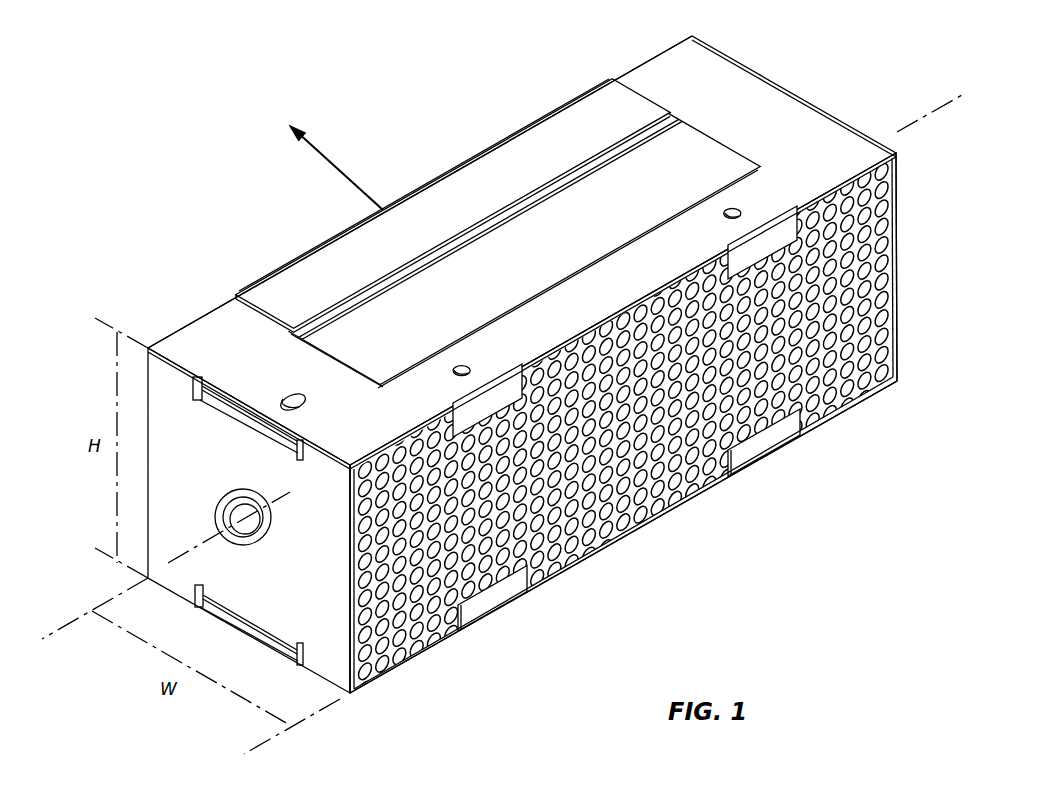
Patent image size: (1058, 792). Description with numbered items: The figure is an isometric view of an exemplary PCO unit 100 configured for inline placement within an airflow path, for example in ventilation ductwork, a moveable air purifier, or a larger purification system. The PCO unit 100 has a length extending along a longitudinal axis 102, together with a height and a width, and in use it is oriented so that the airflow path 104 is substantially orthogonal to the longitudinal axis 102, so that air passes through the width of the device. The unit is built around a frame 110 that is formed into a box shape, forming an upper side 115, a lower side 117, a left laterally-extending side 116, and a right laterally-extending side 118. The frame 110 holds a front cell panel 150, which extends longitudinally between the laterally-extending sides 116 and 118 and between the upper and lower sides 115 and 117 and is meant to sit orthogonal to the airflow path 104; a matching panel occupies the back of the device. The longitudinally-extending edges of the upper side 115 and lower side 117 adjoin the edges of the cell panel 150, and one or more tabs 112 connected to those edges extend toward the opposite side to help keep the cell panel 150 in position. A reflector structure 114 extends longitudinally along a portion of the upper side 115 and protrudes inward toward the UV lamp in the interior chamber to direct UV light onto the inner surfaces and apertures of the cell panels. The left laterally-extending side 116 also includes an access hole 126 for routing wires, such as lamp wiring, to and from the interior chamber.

The PCO unit 100 is at (190, 150).
The longitudinal axis 102 is at (917, 117).
The airflow path 104 is at (662, 469).
The frame 110 is at (797, 112).
The tabs 112 is at (772, 438).
The reflector structure 114 is at (603, 175).
The upper side 115 is at (205, 335).
The left laterally-extending side 116 is at (340, 667).
The lower side 117 is at (583, 555).
The right laterally-extending side 118 is at (897, 335).
The access hole 126 is at (265, 542).
The front cell panel 150 is at (835, 276).